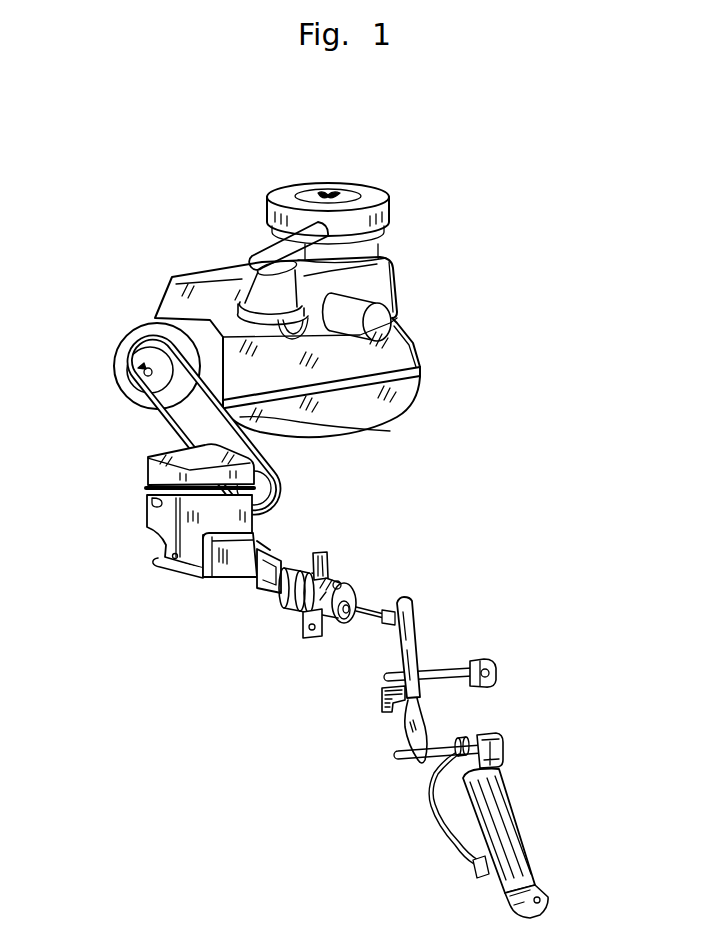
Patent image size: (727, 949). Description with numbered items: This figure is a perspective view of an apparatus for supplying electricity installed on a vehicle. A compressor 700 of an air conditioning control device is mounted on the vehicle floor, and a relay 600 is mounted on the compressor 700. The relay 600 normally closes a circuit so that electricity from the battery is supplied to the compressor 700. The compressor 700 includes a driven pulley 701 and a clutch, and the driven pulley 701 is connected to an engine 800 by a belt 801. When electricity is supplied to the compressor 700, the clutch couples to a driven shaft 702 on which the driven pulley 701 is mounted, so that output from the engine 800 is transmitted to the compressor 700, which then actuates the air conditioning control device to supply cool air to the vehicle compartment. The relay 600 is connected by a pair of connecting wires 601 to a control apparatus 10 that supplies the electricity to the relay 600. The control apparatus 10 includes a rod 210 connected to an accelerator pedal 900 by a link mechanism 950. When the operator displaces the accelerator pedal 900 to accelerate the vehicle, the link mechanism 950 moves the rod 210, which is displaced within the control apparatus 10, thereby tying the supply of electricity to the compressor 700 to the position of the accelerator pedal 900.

The control apparatus 10 is at (283, 608).
The rod 210 is at (367, 608).
The relay 600 is at (261, 537).
The connecting wires 601 is at (279, 549).
The compressor 700 is at (147, 528).
The driven pulley 701 is at (285, 500).
The driven shaft 702 is at (282, 486).
The engine 800 is at (405, 353).
The belt 801 is at (390, 431).
The accelerator pedal 900 is at (510, 818).
The link mechanism 950 is at (454, 637).